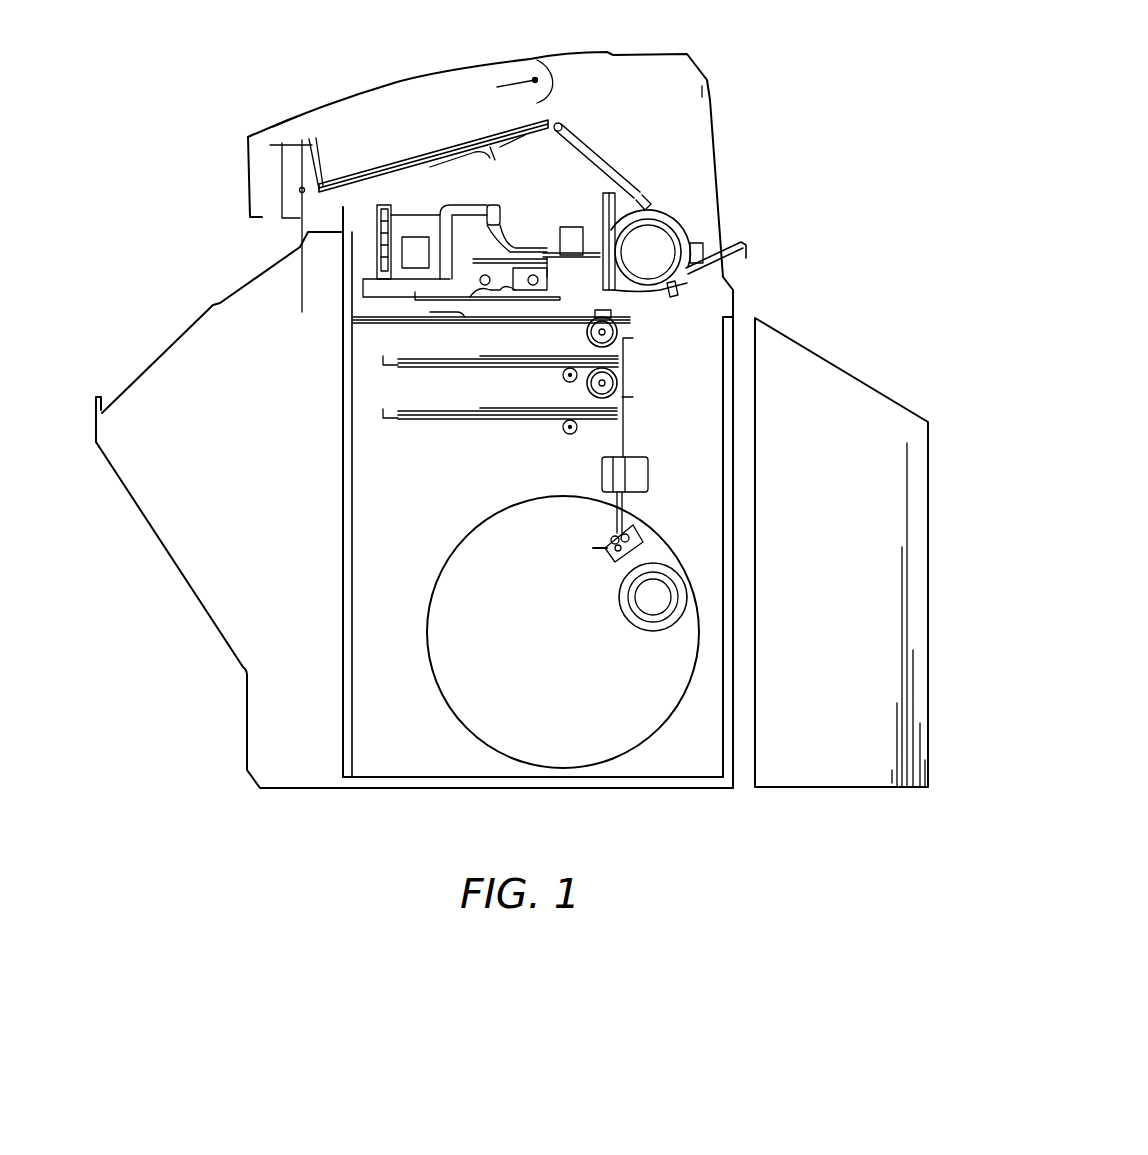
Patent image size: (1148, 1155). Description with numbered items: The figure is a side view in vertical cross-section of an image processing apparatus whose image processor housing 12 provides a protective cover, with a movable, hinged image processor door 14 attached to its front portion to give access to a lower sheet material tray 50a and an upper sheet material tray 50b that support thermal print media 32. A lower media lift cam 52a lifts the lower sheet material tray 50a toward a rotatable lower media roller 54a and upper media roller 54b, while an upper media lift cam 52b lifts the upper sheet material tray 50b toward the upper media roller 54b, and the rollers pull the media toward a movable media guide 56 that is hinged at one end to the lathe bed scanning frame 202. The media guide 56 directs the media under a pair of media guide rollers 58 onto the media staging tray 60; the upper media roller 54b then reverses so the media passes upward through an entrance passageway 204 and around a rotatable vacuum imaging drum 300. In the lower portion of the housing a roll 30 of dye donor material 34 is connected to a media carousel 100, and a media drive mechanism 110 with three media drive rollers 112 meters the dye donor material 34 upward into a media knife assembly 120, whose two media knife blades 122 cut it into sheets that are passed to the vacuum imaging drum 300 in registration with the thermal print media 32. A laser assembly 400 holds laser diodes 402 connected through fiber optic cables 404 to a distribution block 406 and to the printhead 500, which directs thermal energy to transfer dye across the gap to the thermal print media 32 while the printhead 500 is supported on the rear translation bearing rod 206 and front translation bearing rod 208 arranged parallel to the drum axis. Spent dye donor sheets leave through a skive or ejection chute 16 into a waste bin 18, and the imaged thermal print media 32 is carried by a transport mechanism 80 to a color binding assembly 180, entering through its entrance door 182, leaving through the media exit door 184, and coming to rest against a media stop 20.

The image processor housing 12 is at (318, 107).
The image processor door 14 is at (200, 602).
The skive or ejection chute 16 is at (747, 252).
The waste bin 18 is at (832, 354).
The media stop 20 is at (100, 412).
The roll 30 is at (673, 617).
The thermal print media 32 is at (472, 358).
The dye donor material 34 is at (657, 597).
The lower sheet material tray 50a is at (385, 416).
The upper sheet material tray 50b is at (385, 363).
The lower media lift cam 52a is at (565, 428).
The upper media lift cam 52b is at (565, 383).
The lower media roller 54a is at (623, 400).
The upper media roller 54b is at (632, 340).
The media guide 56 is at (590, 307).
The media guide rollers 58 is at (588, 315).
The media staging tray 60 is at (355, 322).
The transport mechanism 80 is at (563, 215).
The media carousel 100 is at (427, 644).
The media drive mechanism 110 is at (657, 540).
The media drive rollers 112 is at (593, 548).
The media knife assembly 120 is at (650, 476).
The media knife blades 122 is at (623, 495).
The color binding assembly 180 is at (497, 130).
The entrance door 182 is at (535, 78).
The media exit door 184 is at (320, 160).
The lathe bed scanning frame 202 is at (655, 245).
The entrance passageway 204 is at (736, 299).
The rear translation bearing rod 206 is at (432, 318).
The front translation bearing rod 208 is at (544, 320).
The vacuum imaging drum 300 is at (613, 268).
The laser assembly 400 is at (415, 207).
The laser diodes 402 is at (402, 240).
The fiber optic cables 404 is at (460, 204).
The distribution block 406 is at (574, 148).
The printhead 500 is at (575, 222).